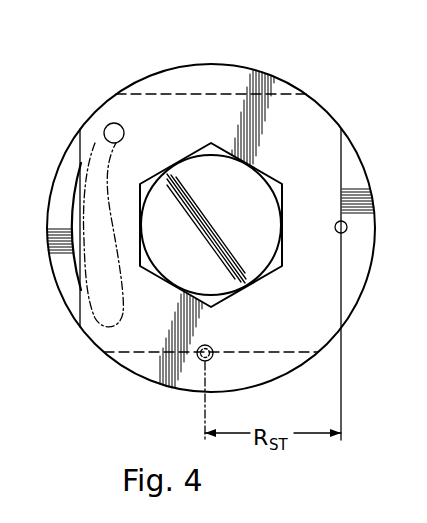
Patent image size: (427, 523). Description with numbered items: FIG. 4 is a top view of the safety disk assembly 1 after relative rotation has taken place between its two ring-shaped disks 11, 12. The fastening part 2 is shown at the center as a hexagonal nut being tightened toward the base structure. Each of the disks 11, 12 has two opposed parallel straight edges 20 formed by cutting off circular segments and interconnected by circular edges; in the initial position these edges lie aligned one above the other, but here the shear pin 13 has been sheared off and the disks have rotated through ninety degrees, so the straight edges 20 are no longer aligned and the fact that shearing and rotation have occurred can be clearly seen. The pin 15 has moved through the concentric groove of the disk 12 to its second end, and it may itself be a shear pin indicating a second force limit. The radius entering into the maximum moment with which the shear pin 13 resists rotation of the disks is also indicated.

The safety disk assembly 1 is at (111, 70).
The ring-shaped disk 11 is at (157, 88).
The ring-shaped disk 12 is at (66, 277).
The shear pin 13 is at (200, 366).
The pin 15 is at (110, 126).
The fastening part 2 is at (252, 186).
The straight edges 20 is at (236, 88).